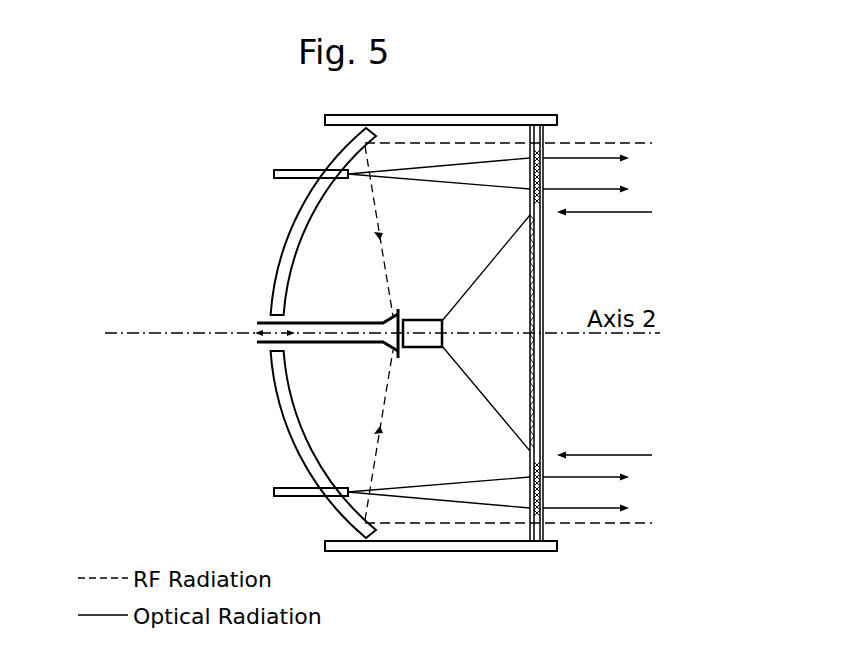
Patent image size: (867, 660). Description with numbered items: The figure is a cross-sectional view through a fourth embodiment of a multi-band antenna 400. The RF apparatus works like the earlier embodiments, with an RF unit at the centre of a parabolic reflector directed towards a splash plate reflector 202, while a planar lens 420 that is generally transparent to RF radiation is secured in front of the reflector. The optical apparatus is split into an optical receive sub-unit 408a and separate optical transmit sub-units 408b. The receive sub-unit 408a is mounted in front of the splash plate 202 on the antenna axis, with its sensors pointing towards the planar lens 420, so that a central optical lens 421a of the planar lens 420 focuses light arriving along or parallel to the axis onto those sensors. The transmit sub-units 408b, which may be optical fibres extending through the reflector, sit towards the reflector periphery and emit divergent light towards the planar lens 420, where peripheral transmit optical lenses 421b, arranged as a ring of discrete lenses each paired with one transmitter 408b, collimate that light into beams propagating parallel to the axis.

The antenna 400 is at (172, 224).
The splash plate reflector 202 is at (400, 352).
The optical receive sub-unit 408a is at (422, 318).
The optical transmit sub-units 408b is at (292, 171).
The planar lens 420 is at (552, 553).
The central optical lens 421a is at (538, 278).
The transmit optical lenses 421b is at (545, 177).